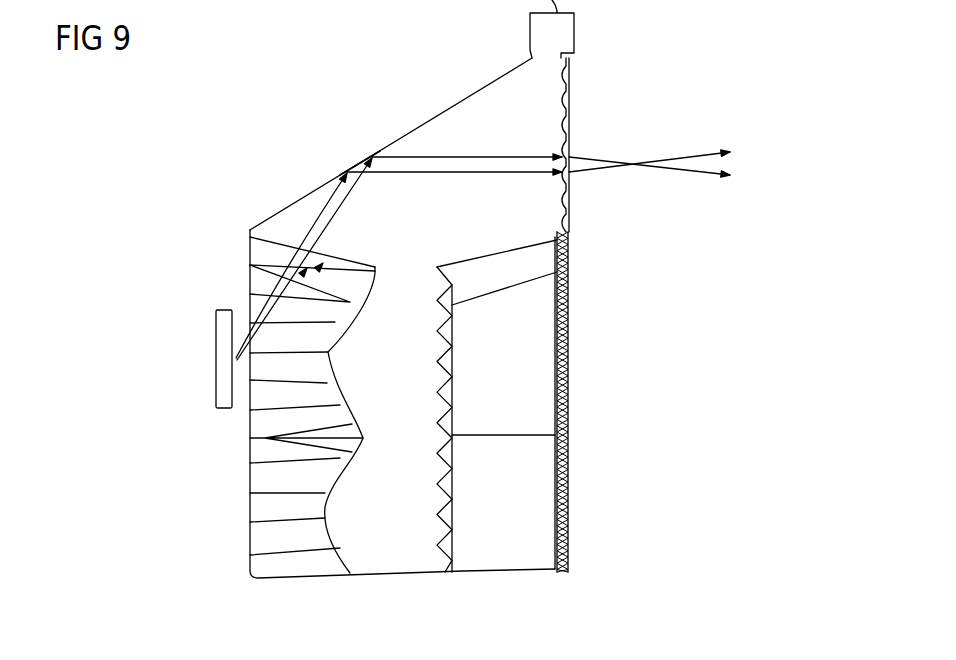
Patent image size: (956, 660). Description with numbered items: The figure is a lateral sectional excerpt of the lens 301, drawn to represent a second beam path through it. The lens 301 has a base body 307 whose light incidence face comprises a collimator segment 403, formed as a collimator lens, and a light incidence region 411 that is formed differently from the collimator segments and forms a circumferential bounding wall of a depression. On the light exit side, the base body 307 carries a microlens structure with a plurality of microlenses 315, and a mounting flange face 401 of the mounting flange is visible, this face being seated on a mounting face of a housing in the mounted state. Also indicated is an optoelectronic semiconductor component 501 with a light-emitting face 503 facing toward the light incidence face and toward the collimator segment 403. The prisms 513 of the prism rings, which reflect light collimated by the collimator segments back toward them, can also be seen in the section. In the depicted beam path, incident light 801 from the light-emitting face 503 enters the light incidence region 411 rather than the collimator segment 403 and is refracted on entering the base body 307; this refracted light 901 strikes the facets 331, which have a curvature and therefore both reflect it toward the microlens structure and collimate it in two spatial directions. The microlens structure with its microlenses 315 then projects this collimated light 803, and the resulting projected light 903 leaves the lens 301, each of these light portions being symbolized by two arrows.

The lens 301 is at (745, 80).
The base body 307 is at (312, 203).
The microlenses 315 is at (567, 97).
The facets 331 is at (360, 166).
The mounting flange face 401 is at (528, 32).
The collimator segment 403 is at (328, 364).
The light incidence region 411 is at (280, 240).
The optoelectronic semiconductor component 501 is at (218, 366).
The light-emitting face 503 is at (247, 385).
The prisms 513 is at (445, 330).
The incident light 801 is at (273, 305).
The collimated light 803 is at (450, 173).
The refracted light 901 is at (337, 218).
The projected light 903 is at (716, 152).